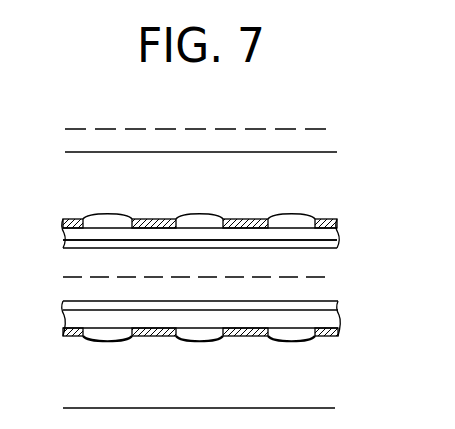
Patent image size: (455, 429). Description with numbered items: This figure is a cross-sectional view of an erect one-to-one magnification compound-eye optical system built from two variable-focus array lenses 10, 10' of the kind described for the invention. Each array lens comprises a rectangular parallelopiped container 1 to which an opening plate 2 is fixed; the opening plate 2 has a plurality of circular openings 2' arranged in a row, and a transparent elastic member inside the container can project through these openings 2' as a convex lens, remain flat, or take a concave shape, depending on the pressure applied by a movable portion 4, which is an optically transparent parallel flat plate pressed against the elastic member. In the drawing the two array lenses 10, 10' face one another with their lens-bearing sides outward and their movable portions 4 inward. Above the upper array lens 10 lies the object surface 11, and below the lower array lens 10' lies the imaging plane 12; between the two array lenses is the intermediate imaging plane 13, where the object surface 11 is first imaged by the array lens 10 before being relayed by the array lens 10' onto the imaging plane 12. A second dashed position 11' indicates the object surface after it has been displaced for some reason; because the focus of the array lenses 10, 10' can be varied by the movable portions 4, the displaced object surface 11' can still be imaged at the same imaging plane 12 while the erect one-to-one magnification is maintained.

The container 1 is at (0, 114).
The opening plate 2 is at (199, 281).
The circular openings 2' is at (203, 277).
The movable portion 4 is at (62, 245).
The array lens 10 is at (231, 281).
The array lens 10' is at (233, 321).
The object surface 11 is at (229, 139).
The displaced object surface position 11' is at (239, 111).
The imaging plane 12 is at (335, 407).
The intermediate imaging plane 13 is at (328, 278).